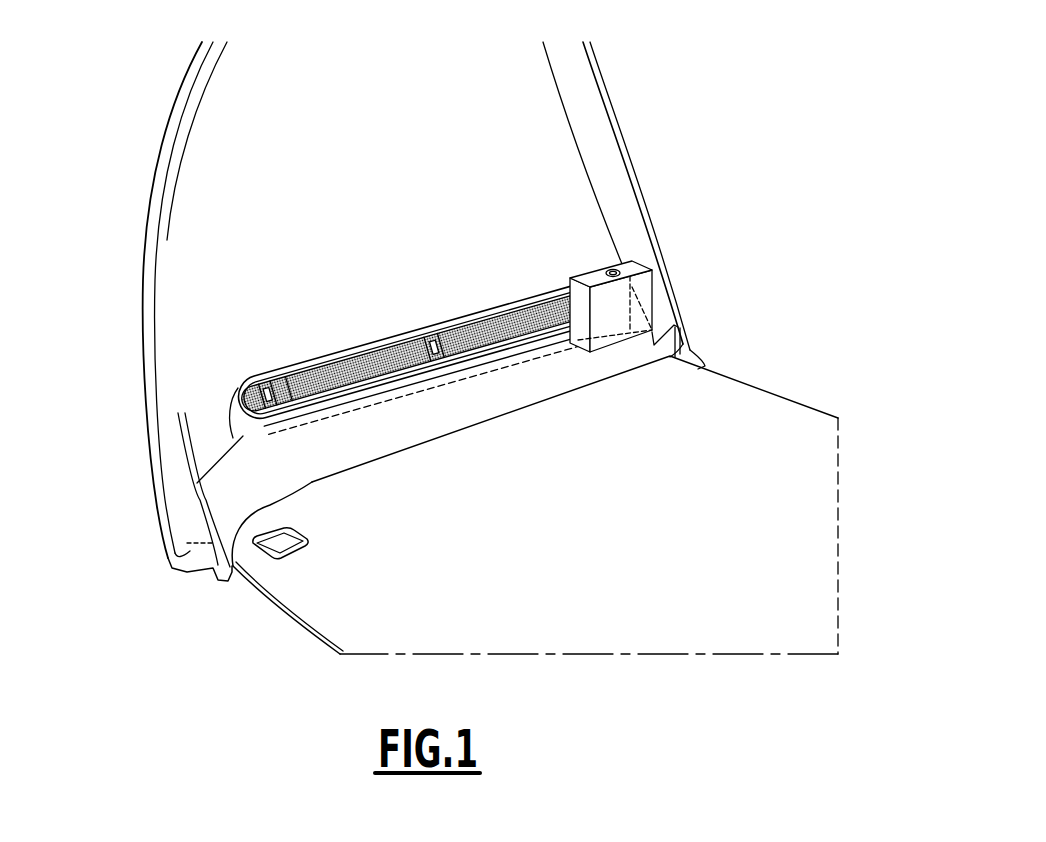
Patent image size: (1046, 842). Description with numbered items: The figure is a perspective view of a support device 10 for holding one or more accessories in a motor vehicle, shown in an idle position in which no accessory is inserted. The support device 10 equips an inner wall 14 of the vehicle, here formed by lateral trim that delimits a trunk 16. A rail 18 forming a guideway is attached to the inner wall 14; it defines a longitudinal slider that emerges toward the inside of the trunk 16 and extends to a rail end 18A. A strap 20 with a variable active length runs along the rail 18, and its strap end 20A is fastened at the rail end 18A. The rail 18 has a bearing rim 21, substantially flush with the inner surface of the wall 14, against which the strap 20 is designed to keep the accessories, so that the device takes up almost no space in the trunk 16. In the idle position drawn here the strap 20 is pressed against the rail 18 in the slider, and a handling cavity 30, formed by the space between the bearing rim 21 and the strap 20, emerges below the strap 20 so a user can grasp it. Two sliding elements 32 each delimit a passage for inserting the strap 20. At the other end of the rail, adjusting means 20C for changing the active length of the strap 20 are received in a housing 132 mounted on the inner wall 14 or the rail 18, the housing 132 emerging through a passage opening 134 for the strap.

The support device 10 is at (449, 348).
The inner wall 14 is at (520, 125).
The trunk 16 is at (755, 433).
The rail 18 is at (290, 363).
The rail end 18A is at (197, 483).
The strap 20 is at (388, 362).
The strap end 20A is at (253, 380).
The adjusting means 20C is at (620, 255).
The bearing rim 21 is at (363, 347).
The handling cavity 30 is at (502, 300).
The sliding element 32 is at (268, 405).
The housing 132 is at (603, 335).
The passage opening 134 is at (563, 290).